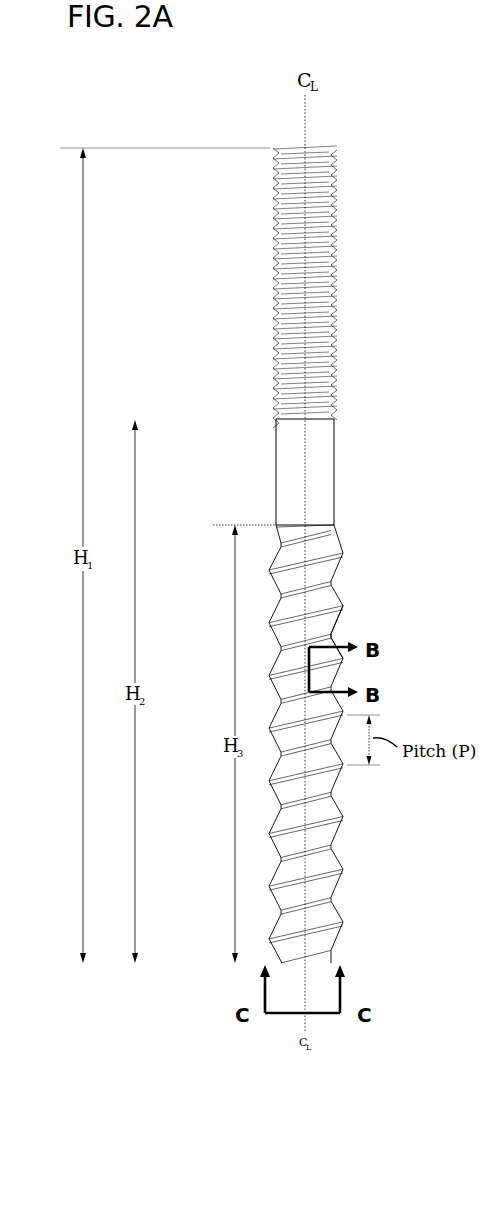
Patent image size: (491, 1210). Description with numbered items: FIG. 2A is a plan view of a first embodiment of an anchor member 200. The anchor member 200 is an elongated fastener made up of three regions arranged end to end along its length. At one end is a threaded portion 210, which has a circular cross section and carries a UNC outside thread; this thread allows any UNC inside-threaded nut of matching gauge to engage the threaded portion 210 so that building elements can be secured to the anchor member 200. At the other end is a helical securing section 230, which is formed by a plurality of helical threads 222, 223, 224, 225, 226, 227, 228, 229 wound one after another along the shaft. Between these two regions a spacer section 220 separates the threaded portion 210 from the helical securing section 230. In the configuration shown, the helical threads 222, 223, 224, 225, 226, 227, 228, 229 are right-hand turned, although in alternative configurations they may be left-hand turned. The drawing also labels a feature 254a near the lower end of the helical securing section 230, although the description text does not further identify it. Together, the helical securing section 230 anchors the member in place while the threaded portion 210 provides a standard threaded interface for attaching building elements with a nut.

The anchor member 200 is at (282, 111).
The threaded portion 210 is at (345, 243).
The spacer section 220 is at (328, 457).
The helical thread 222 is at (340, 917).
The helical thread 223 is at (335, 883).
The helical thread 224 is at (335, 832).
The helical thread 225 is at (333, 780).
The helical thread 226 is at (283, 743).
The helical thread 227 is at (280, 663).
The helical thread 228 is at (333, 600).
The helical thread 229 is at (332, 548).
The helical securing section 230 is at (358, 641).
The tip end 254a is at (336, 935).